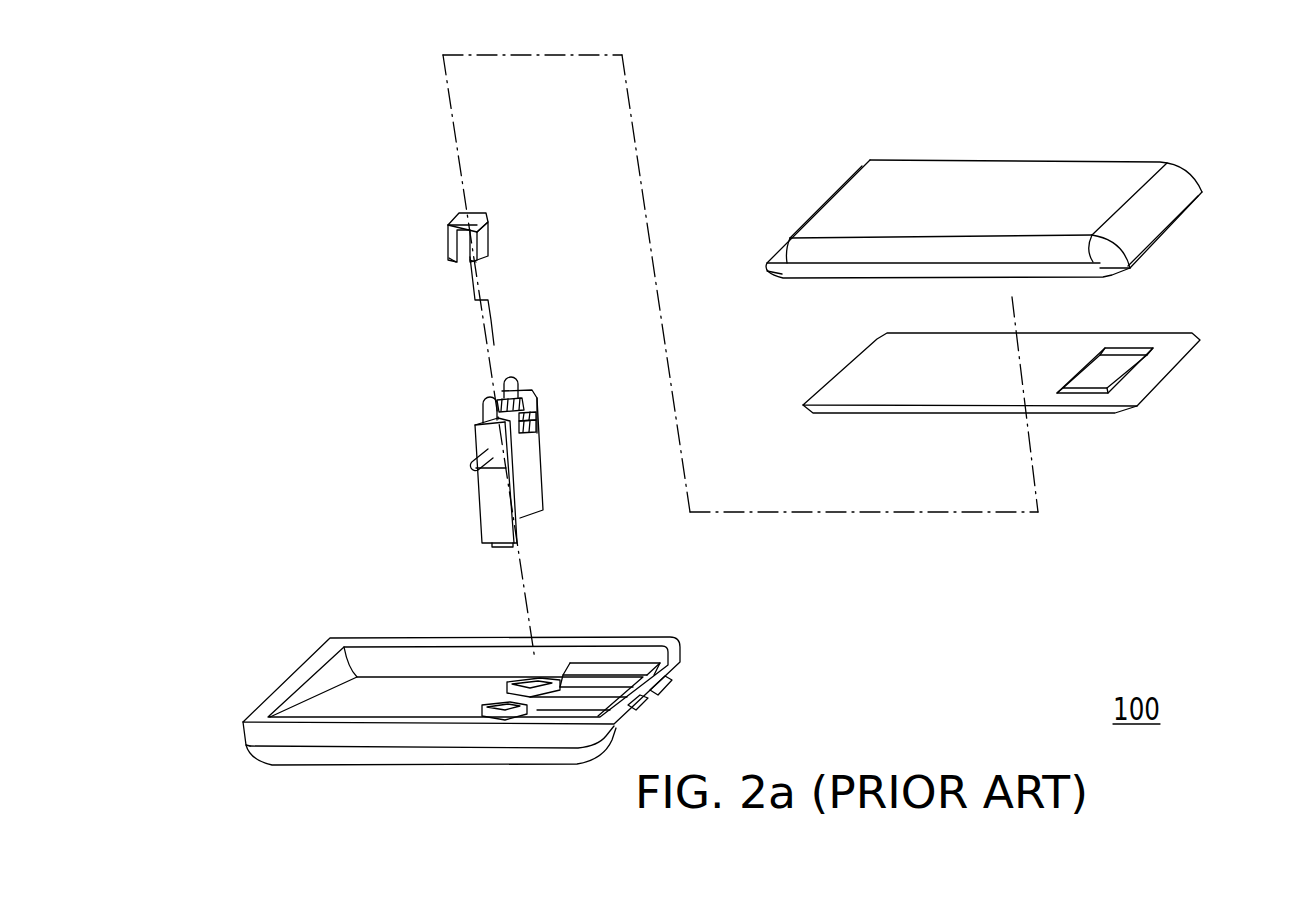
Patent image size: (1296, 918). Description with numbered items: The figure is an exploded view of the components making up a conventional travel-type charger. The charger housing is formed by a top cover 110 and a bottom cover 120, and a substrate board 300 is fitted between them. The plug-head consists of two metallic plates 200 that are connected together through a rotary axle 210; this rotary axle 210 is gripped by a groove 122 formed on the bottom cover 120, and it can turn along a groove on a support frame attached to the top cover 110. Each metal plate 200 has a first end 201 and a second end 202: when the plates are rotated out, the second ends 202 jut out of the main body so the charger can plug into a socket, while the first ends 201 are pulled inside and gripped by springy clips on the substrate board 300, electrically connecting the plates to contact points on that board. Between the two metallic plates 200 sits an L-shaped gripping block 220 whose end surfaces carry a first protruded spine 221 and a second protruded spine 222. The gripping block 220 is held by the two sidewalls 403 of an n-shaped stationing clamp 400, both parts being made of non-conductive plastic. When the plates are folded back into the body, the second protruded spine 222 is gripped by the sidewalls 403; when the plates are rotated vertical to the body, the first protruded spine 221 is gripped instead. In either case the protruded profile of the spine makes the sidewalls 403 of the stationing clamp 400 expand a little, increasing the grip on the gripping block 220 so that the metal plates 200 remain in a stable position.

The top cover 110 is at (1125, 173).
The bottom cover 120 is at (253, 753).
The groove 122 is at (524, 716).
The metallic plates 200 is at (485, 488).
The first ends 201 is at (483, 407).
The second ends 202 is at (533, 503).
The rotary axle 210 is at (475, 457).
The L-shaped gripping block 220 is at (516, 428).
The first protruded spine 221 is at (532, 418).
The second protruded spine 222 is at (520, 403).
The substrate board 300 is at (1167, 357).
The n-shaped stationing clamp 400 is at (455, 242).
The sidewalls 403 is at (453, 258).